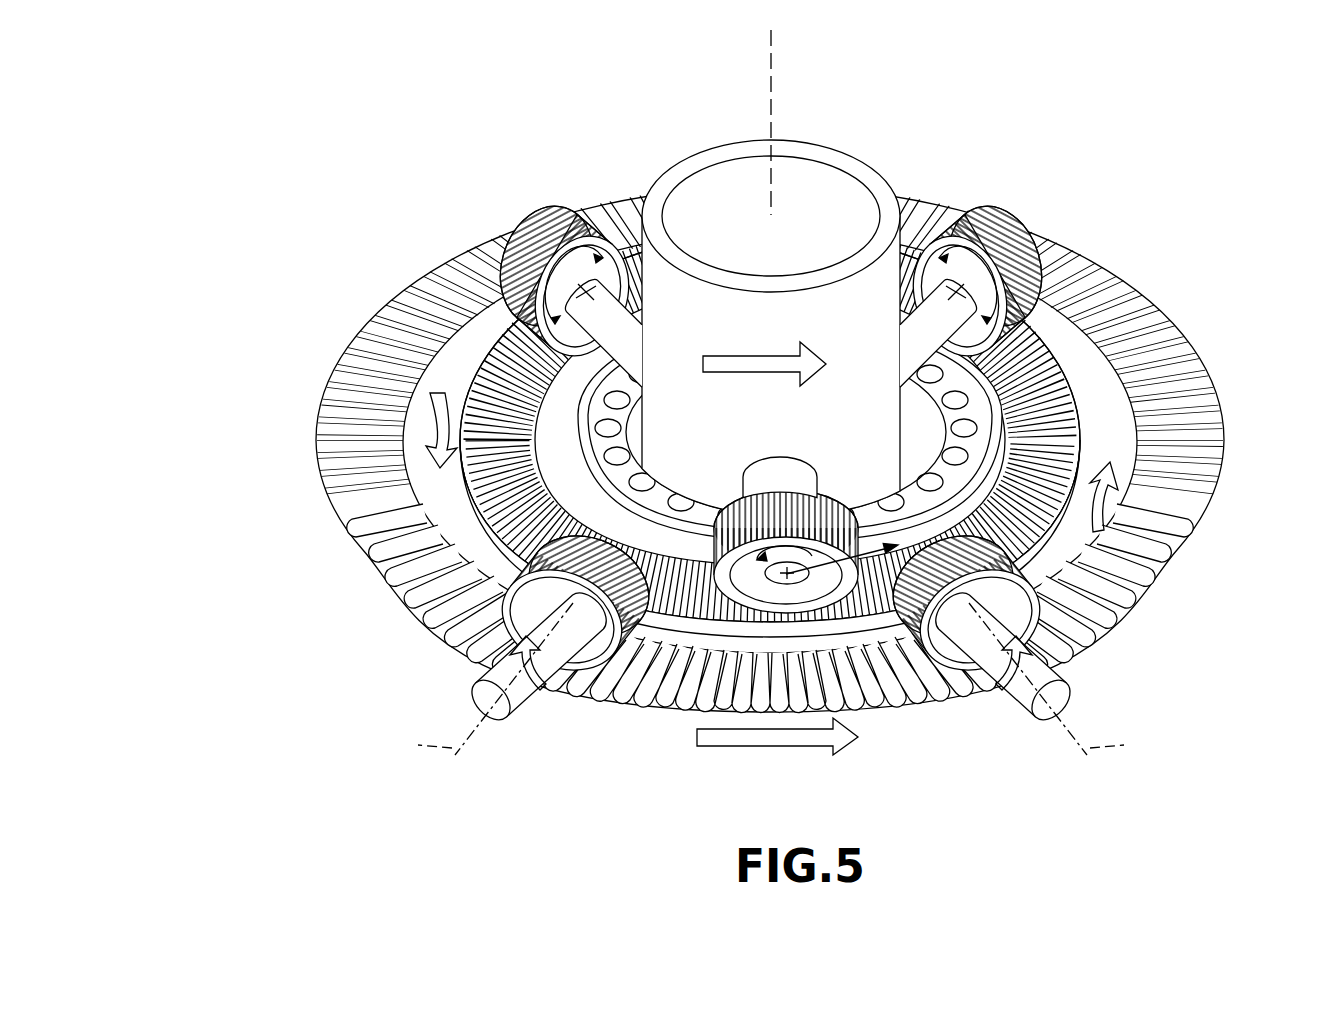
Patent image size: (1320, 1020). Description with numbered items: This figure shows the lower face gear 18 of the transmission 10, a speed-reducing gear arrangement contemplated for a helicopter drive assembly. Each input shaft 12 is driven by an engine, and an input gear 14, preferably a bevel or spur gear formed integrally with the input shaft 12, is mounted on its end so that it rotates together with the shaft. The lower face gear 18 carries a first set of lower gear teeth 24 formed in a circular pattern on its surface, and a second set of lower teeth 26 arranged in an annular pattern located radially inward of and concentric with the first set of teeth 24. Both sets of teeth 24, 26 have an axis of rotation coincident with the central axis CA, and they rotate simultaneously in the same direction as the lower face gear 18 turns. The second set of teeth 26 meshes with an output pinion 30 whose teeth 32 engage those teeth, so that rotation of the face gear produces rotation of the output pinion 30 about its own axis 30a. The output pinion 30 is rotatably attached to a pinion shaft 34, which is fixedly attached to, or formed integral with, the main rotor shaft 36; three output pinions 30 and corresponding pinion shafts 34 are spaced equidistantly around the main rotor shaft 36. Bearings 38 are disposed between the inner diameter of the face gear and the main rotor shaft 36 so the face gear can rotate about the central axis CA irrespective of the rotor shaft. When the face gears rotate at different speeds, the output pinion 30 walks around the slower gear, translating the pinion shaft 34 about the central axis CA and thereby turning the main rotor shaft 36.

The transmission 10 is at (1128, 209).
The input shaft 12 is at (532, 706).
The input gear 14 is at (603, 668).
The lower face gear 18 is at (1212, 390).
The first set of lower gear teeth 24 is at (1165, 362).
The second set of lower teeth 26 is at (688, 620).
The output pinion 30 is at (545, 245).
The output pinion axis 30a is at (800, 587).
The teeth 32 is at (562, 222).
The pinion shaft 34 is at (630, 318).
The main rotor shaft 36 is at (741, 310).
The bearings 38 is at (928, 442).
The central axis CA is at (773, 118).